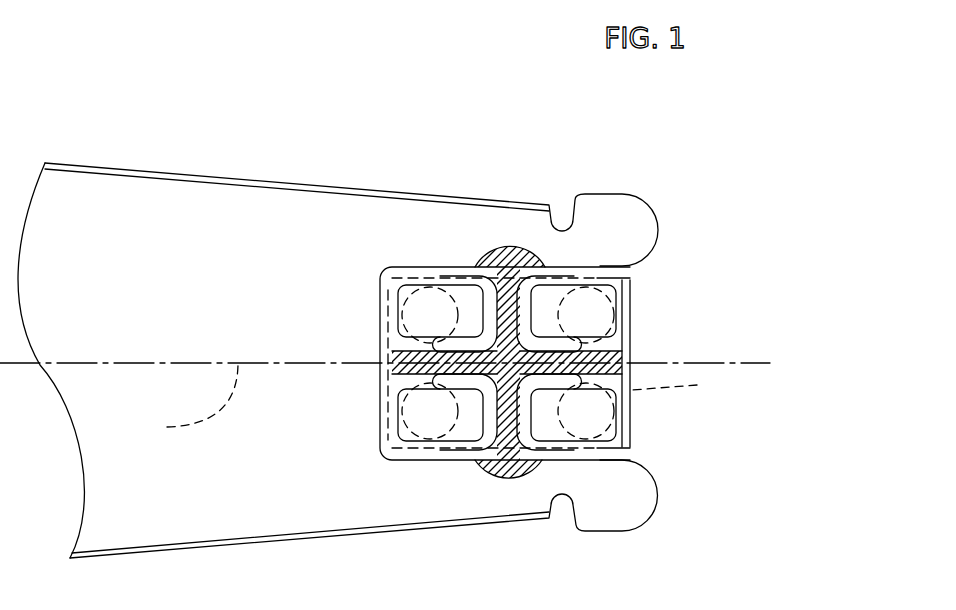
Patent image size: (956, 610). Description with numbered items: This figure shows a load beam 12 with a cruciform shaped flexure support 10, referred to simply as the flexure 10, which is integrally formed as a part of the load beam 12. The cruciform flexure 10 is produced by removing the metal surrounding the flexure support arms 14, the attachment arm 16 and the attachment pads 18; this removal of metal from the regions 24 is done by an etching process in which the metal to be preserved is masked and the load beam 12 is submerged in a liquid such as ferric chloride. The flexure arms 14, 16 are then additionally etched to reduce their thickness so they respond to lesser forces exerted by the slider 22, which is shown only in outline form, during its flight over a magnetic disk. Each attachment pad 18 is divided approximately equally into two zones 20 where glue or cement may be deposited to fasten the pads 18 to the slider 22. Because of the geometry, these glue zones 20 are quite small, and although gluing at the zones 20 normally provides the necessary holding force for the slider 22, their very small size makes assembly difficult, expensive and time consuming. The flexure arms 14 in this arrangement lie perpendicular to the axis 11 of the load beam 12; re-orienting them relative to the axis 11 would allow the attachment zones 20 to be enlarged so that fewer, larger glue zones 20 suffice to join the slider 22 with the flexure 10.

The flexure support 10 is at (683, 350).
The axis 11 is at (182, 402).
The load beam 12 is at (283, 217).
The flexure support arms 14 is at (515, 295).
The attachment arm 16 is at (493, 380).
The attachment pads 18 is at (400, 372).
The zones 20 is at (423, 315).
The slider 22 is at (697, 385).
The regions 24 is at (420, 273).